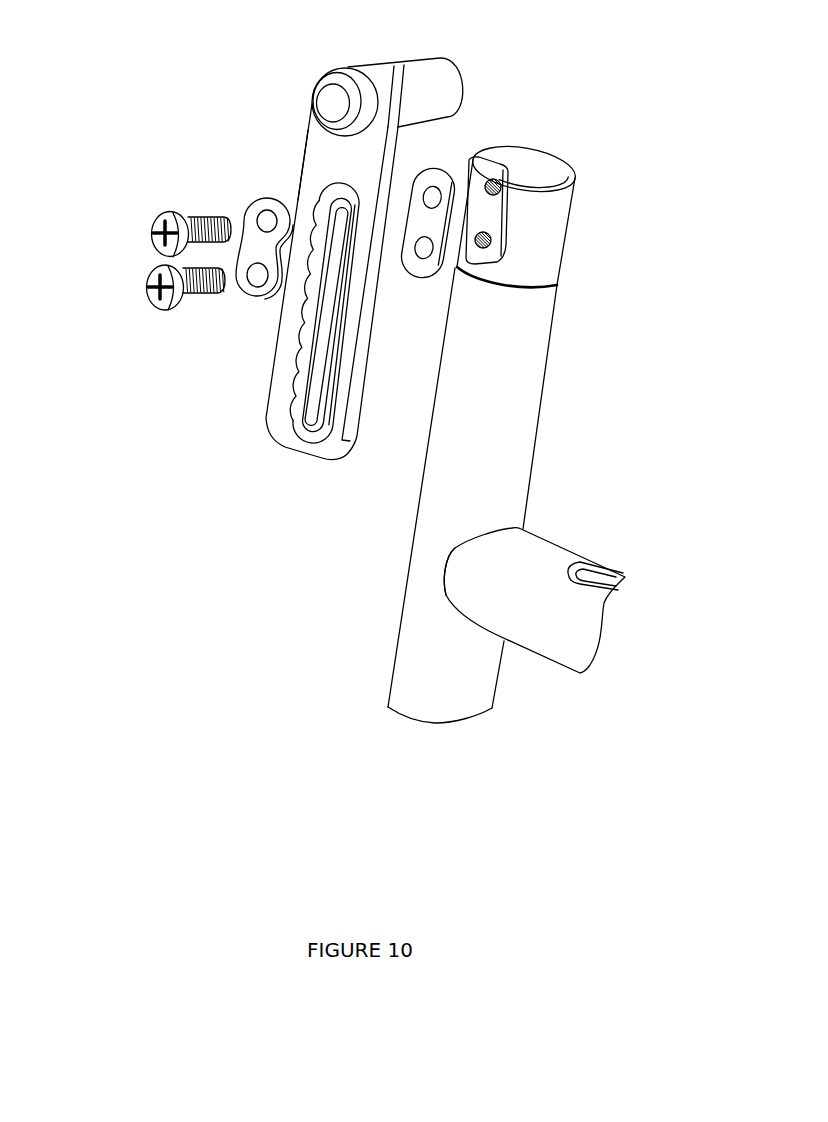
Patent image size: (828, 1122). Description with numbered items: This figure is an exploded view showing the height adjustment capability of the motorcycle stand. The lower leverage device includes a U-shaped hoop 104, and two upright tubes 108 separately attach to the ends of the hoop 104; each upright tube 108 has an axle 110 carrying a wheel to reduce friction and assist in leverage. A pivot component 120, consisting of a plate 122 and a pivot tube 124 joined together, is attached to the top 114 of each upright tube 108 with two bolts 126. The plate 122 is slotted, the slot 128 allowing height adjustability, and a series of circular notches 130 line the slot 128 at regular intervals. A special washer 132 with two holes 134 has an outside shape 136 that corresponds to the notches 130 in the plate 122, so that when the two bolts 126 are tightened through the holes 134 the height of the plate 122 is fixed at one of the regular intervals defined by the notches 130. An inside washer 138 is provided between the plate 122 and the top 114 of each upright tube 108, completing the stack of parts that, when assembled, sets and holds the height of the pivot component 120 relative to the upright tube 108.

The U-shaped hoop 104 is at (540, 547).
The upright tube 108 is at (507, 413).
The axle 110 is at (447, 557).
The top of upright tube 114 is at (558, 213).
The pivot component 120 is at (308, 43).
The plate 122 is at (270, 423).
The pivot tube 124 is at (422, 66).
The bolt 126 is at (150, 232).
The slot 128 is at (315, 352).
The circular notch 130 is at (330, 397).
The special washer 132 is at (258, 207).
The hole 134 is at (257, 217).
The outside shape 136 is at (288, 196).
The inside washer 138 is at (433, 173).